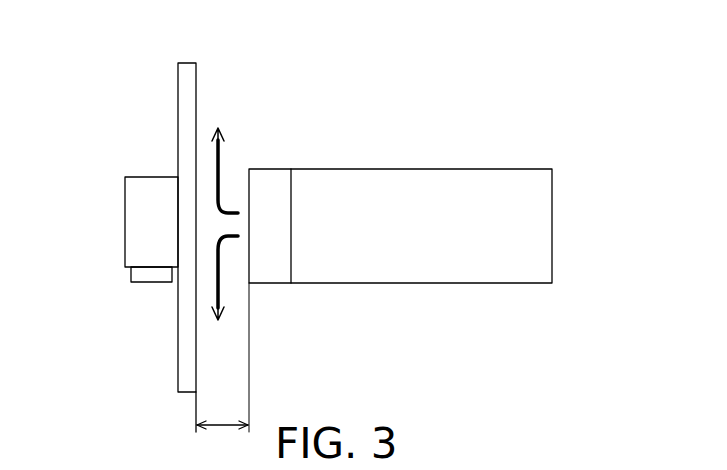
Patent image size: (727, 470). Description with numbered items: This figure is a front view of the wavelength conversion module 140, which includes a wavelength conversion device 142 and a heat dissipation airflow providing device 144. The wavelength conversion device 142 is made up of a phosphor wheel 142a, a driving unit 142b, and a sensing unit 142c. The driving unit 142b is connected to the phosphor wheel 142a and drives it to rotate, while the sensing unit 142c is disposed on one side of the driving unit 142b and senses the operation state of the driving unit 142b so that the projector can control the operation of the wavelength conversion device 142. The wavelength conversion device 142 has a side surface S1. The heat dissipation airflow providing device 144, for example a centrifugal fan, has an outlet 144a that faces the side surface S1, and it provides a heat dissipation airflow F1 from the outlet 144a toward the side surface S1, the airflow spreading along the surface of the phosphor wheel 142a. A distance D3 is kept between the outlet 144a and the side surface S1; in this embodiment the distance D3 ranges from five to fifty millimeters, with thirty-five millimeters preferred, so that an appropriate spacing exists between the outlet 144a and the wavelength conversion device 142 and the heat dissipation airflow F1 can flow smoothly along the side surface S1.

The wavelength conversion module 140 is at (634, 397).
The wavelength conversion device 142 is at (208, 77).
The phosphor wheel 142a is at (188, 70).
The driving unit 142b is at (133, 217).
The sensing unit 142c is at (148, 277).
The heat dissipation airflow providing device 144 is at (537, 222).
The outlet 144a is at (252, 196).
The side surface S1 is at (198, 157).
The heat dissipation airflow F1 is at (218, 292).
The distance D3 is at (222, 357).